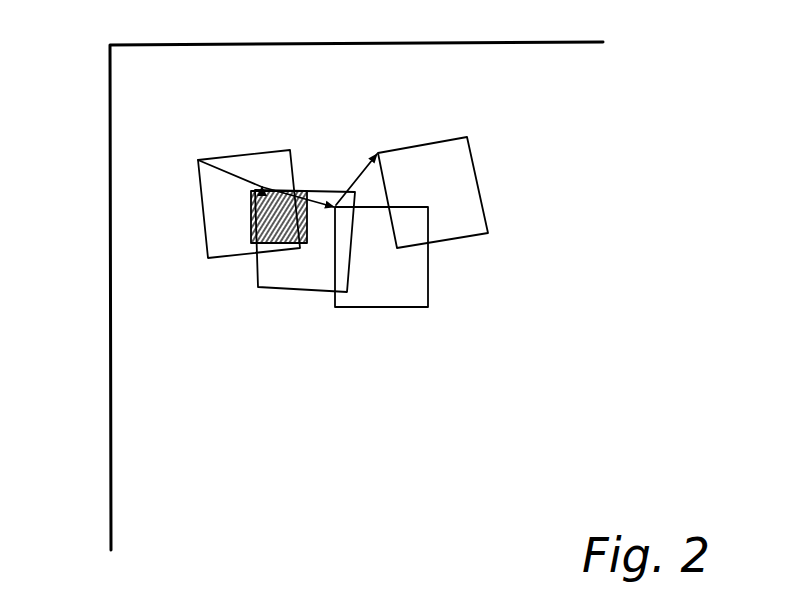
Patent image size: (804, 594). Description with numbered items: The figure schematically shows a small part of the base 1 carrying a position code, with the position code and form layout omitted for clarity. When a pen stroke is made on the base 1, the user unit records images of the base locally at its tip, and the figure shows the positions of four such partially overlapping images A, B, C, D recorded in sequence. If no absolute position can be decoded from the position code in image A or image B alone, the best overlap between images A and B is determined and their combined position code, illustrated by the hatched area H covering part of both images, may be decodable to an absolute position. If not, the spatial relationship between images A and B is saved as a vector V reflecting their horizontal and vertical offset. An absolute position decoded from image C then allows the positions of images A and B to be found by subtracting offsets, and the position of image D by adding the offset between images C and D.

The base 1 is at (108, 200).
The image A is at (217, 249).
The image B is at (286, 267).
The image C is at (405, 290).
The image D is at (472, 196).
The hatched area H is at (251, 208).
The vector V is at (244, 186).